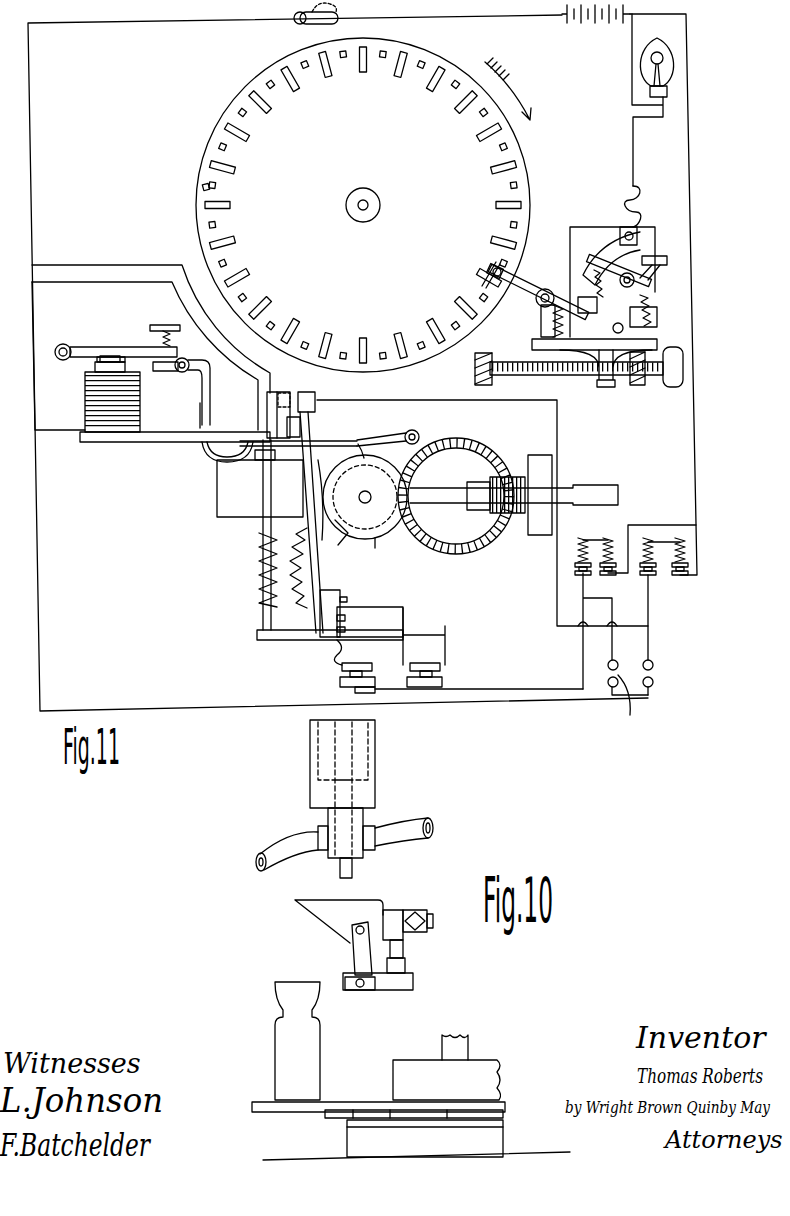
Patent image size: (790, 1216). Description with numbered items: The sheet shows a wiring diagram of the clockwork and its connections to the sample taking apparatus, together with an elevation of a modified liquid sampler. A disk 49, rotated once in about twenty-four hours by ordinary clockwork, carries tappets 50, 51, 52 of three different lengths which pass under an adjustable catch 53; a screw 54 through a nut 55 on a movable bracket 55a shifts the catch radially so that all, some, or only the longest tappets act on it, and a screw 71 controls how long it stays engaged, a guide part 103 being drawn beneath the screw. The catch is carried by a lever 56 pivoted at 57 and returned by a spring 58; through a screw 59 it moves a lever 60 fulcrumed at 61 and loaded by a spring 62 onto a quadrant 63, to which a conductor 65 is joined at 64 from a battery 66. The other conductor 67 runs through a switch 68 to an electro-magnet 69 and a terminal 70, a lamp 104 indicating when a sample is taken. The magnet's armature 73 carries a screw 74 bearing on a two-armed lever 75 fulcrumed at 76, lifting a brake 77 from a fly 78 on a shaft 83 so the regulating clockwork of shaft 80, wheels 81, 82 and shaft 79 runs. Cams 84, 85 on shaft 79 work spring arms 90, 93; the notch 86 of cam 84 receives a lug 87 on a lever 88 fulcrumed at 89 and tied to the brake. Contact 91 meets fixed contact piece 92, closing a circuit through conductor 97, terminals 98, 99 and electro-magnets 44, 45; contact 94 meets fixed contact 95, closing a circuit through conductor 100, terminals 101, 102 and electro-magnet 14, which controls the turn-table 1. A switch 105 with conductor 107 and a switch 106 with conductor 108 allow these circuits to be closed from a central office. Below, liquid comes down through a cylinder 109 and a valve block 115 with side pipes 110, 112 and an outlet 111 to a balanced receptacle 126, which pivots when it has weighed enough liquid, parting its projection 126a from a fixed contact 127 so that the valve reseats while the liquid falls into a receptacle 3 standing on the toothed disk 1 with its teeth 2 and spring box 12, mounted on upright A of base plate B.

In FIG. 10, the disk 1 is at (304, 1112).
In FIG. 10, the teeth 2 is at (335, 1120).
In FIG. 10, the receptacles 3 is at (290, 1049).
In FIG. 10, the box 12 is at (404, 1075).
In FIG. 10, the rod or upright A is at (458, 1046).
In FIG. 10, the base plate B is at (490, 1140).
In FIG. 11, the electro-magnet 14 is at (595, 549).
In FIG. 11, the electro-magnet 44 is at (652, 540).
In FIG. 11, the electro-magnet 45 is at (688, 557).
In FIG. 11, the disk 49 is at (363, 205).
In FIG. 11, the tappets 50 is at (214, 143).
In FIG. 11, the tappets 51 is at (222, 170).
In FIG. 11, the tappets 52 is at (243, 138).
In FIG. 11, the adjustable catch 53 is at (490, 280).
In FIG. 11, the screw 54 is at (520, 378).
In FIG. 11, the nut 55 is at (625, 385).
In FIG. 11, the movable bracket 55a is at (652, 386).
In FIG. 11, the lever 56 is at (526, 283).
In FIG. 11, the pivot 57 is at (536, 303).
In FIG. 11, the spring 58 is at (545, 328).
In FIG. 11, the screw 59 is at (589, 291).
In FIG. 11, the lever 60 is at (640, 268).
In FIG. 11, the fulcrum 61 is at (636, 280).
In FIG. 11, the spring 62 is at (660, 315).
In FIG. 11, the plate or quadrant 63 is at (602, 240).
In FIG. 11, the connection 64 is at (636, 233).
In FIG. 11, the conductor 65 is at (634, 152).
In FIG. 11, the battery 66 is at (596, 29).
In FIG. 11, the conductor 67 is at (437, 16).
In FIG. 11, the switch 68 is at (304, 23).
In FIG. 11, the electro-magnet 69 is at (85, 395).
In FIG. 11, the terminal 70 is at (660, 343).
In FIG. 11, the screw 71 is at (495, 265).
In FIG. 11, the armature 73 is at (110, 347).
In FIG. 11, the screw 74 is at (163, 325).
In FIG. 11, the two-armed lever 75 is at (212, 406).
In FIG. 11, the fulcrum 76 is at (180, 372).
In FIG. 11, the brake 77 is at (202, 456).
In FIG. 11, the fly or fan 78 is at (217, 500).
In FIG. 11, the shaft 79 is at (370, 505).
In FIG. 11, the shaft 80 is at (590, 485).
In FIG. 11, the wheel 81 is at (518, 513).
In FIG. 11, the wheel 82 is at (483, 554).
In FIG. 11, the shaft 83 is at (263, 554).
In FIG. 11, the cam 84 is at (375, 548).
In FIG. 11, the cam 85 is at (326, 540).
In FIG. 11, the notch 86 is at (364, 487).
In FIG. 11, the lug 87 is at (372, 440).
In FIG. 11, the lever 88 is at (335, 441).
In FIG. 11, the fulcrum 89 is at (420, 435).
In FIG. 11, the spring arm 90 is at (315, 410).
In FIG. 11, the contact 91 is at (300, 392).
In FIG. 11, the contact piece 92 is at (279, 392).
In FIG. 11, the spring arm 93 is at (308, 491).
In FIG. 11, the contact 94 is at (300, 438).
In FIG. 11, the contact 95 is at (262, 453).
In FIG. 11, the conductor 97 is at (124, 268).
In FIG. 11, the terminal 98 is at (348, 604).
In FIG. 11, the terminal 99 is at (435, 681).
In FIG. 11, the conductor 100 is at (60, 284).
In FIG. 11, the terminal 101 is at (348, 627).
In FIG. 11, the terminal 102 is at (370, 683).
In FIG. 11, the bracket 103 is at (581, 390).
In FIG. 11, the electric lamp 104 is at (651, 60).
In FIG. 11, the switch 105 is at (653, 675).
In FIG. 11, the switch 106 is at (621, 700).
In FIG. 11, the conductor 107 is at (650, 646).
In FIG. 11, the conductor 108 is at (613, 647).
In FIG. 10, the cylinder 109 is at (370, 768).
In FIG. 10, the valve 110 is at (340, 856).
In FIG. 10, the valve body 111 is at (365, 850).
In FIG. 10, the tube 112 is at (416, 828).
In FIG. 10, the valve block 115 is at (350, 822).
In FIG. 10, the balanced receptacle 126 is at (330, 932).
In FIG. 10, the projection 126a is at (405, 912).
In FIG. 10, the contact 127 is at (405, 953).